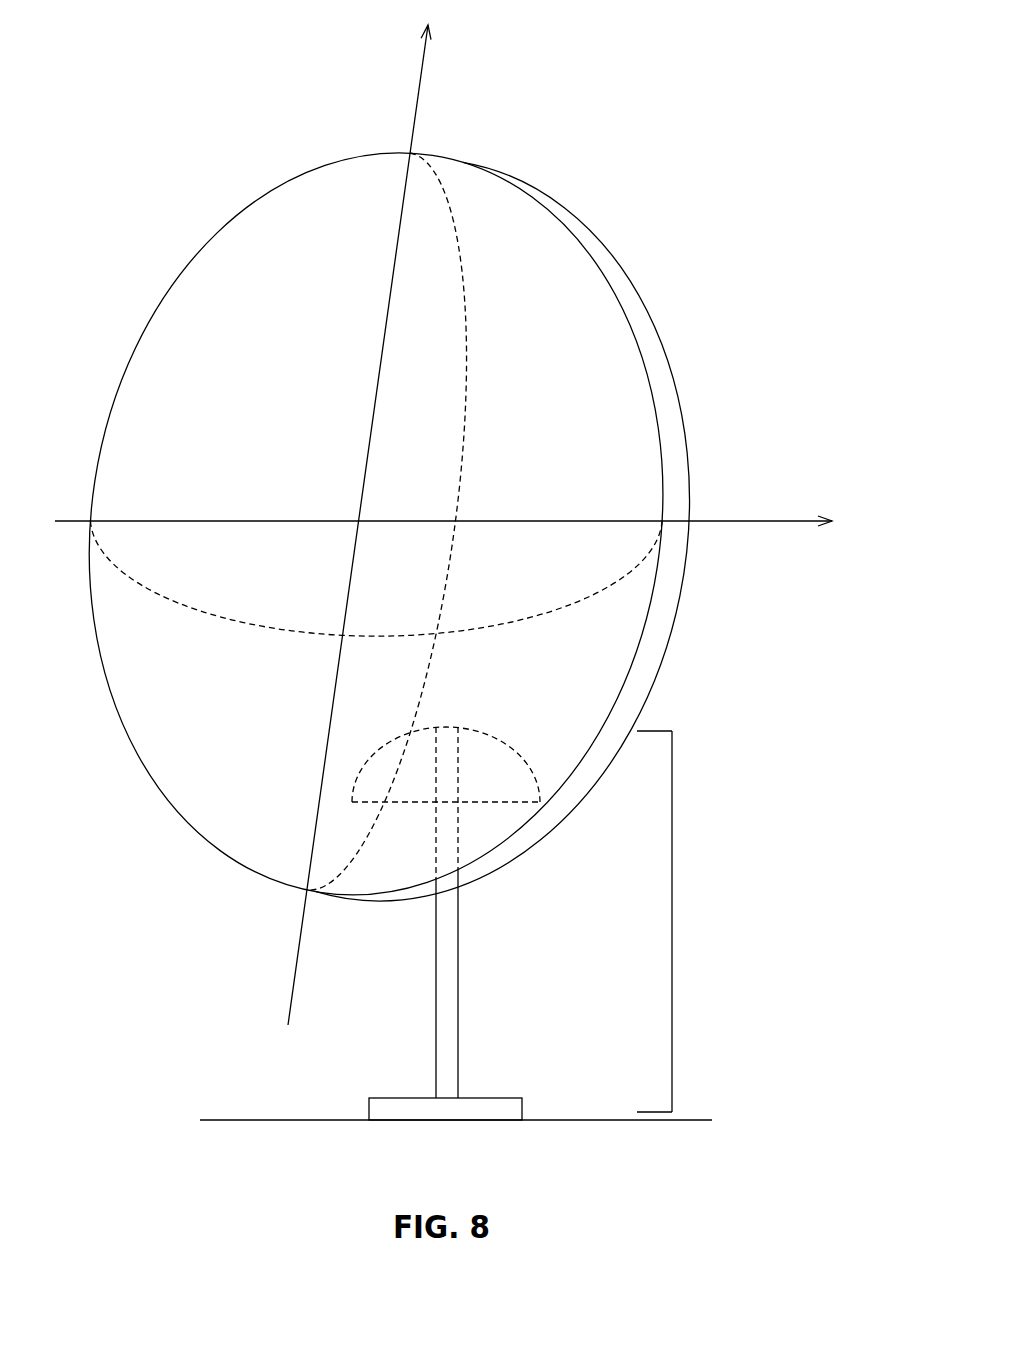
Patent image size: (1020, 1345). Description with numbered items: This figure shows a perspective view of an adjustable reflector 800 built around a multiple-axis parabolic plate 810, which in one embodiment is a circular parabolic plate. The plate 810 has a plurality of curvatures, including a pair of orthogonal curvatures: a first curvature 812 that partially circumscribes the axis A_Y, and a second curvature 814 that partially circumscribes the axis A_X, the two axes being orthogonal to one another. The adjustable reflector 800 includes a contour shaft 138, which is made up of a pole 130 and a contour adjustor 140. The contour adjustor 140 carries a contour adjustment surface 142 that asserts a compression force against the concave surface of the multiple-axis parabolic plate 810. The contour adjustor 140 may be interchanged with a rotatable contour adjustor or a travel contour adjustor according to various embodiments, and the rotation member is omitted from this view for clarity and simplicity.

The adjustable reflector 800 is at (453, 564).
The multiple-axis parabolic plate 810 is at (588, 780).
The first curvature 812 is at (453, 272).
The second curvature 814 is at (503, 627).
The contour adjustment surface 142 is at (524, 757).
The contour adjustor 140 is at (393, 813).
The pole 130 is at (474, 1023).
The contour shaft 138 is at (672, 927).